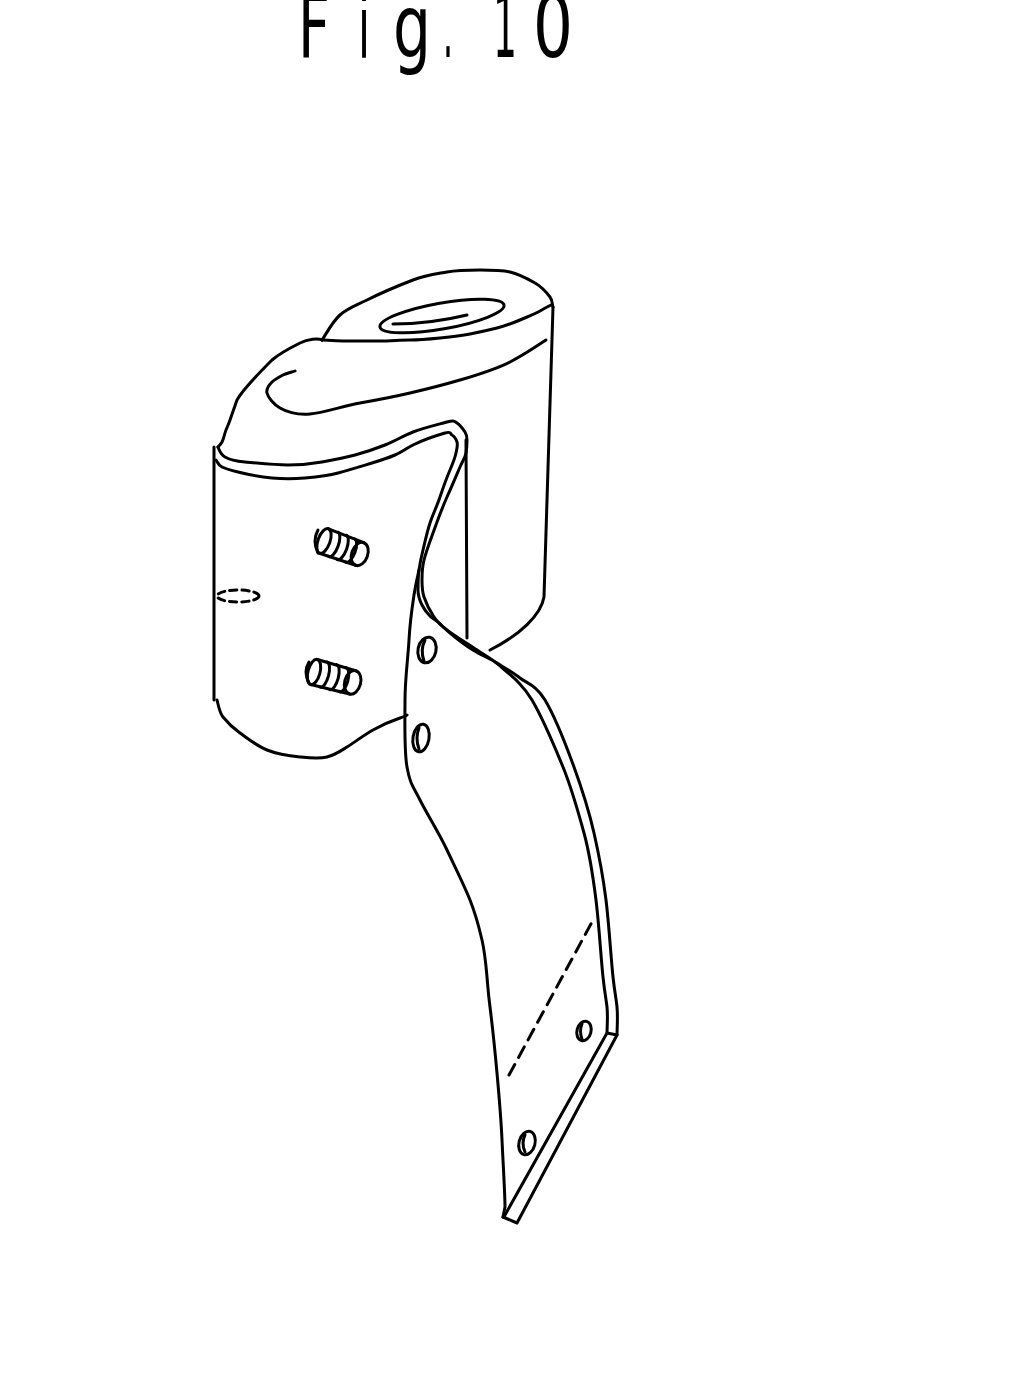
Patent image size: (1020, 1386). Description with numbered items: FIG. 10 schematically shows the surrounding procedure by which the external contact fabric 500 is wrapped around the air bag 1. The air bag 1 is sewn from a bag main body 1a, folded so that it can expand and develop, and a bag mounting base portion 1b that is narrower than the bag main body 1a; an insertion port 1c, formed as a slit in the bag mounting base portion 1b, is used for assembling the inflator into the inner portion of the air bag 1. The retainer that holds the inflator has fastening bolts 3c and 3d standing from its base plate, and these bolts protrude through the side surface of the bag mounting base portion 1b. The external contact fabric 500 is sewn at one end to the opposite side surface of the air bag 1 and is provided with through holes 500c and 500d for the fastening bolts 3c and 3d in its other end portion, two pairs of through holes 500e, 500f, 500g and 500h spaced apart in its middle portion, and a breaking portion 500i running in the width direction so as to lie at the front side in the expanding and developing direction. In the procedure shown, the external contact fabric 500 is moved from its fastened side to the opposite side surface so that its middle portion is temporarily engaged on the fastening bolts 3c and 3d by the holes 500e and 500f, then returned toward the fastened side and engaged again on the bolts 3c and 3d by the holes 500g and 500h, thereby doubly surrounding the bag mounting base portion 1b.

The air bag 1 is at (287, 349).
The bag main body 1a is at (470, 287).
The bag mounting base portion 1b is at (250, 424).
The insertion port 1c is at (217, 590).
The fastening bolt 3c is at (336, 526).
The fastening bolt 3d is at (356, 695).
The external contact fabric 500 is at (613, 833).
The through hole 500c is at (578, 1030).
The through hole 500d is at (519, 1147).
The through hole 500e is at (316, 556).
The through hole 500f is at (316, 685).
The through hole 500g is at (416, 640).
The through hole 500h is at (408, 758).
The breaking portion 500i is at (550, 1000).